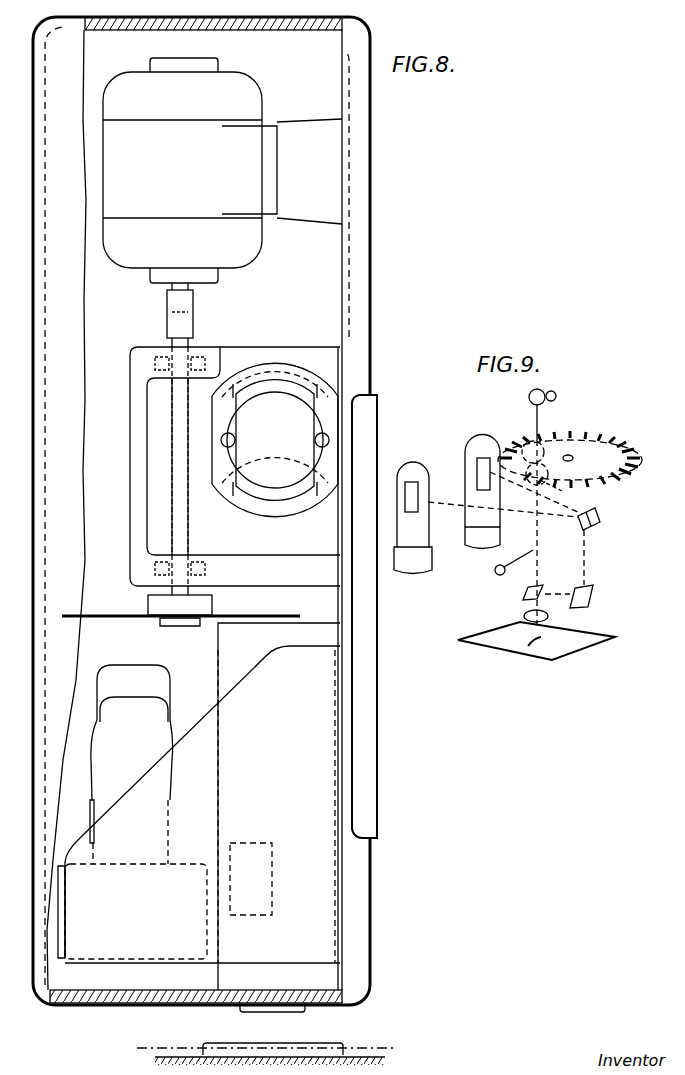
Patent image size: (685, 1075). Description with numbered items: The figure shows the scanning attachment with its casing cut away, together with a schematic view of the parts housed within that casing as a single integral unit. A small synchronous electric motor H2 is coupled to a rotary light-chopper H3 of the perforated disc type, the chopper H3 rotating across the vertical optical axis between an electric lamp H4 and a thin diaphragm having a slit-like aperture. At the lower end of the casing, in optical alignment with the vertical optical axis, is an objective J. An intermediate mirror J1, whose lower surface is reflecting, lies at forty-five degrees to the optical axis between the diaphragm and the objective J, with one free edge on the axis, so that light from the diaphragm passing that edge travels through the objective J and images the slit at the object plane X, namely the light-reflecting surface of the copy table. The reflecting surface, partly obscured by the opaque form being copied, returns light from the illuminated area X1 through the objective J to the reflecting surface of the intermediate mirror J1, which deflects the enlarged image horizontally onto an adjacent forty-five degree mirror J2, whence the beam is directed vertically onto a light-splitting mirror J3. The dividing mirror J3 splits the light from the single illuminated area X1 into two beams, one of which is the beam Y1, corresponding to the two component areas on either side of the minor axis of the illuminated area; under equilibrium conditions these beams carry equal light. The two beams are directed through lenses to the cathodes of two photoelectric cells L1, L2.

In FIG. 8, the synchronous electric motor H2 is at (252, 93).
In FIG. 8, the rotary light-chopper H3 is at (129, 616).
In FIG. 9, the rotary light-chopper H3 is at (597, 442).
In FIG. 9, the electric lamp H4 is at (530, 392).
In FIG. 9, the photoelectric cell L1 is at (414, 470).
In FIG. 9, the photoelectric cell L2 is at (482, 448).
In FIG. 9, the light beam Y1 is at (559, 492).
In FIG. 9, the light-splitting mirror J3 is at (597, 511).
In FIG. 9, the intermediate mirror J1 is at (522, 595).
In FIG. 9, the forty-five degree mirror J2 is at (596, 592).
In FIG. 9, the objective J is at (548, 616).
In FIG. 8, the object plane X is at (150, 1048).
In FIG. 9, the object plane X is at (565, 645).
In FIG. 9, the illuminated area X1 is at (537, 640).